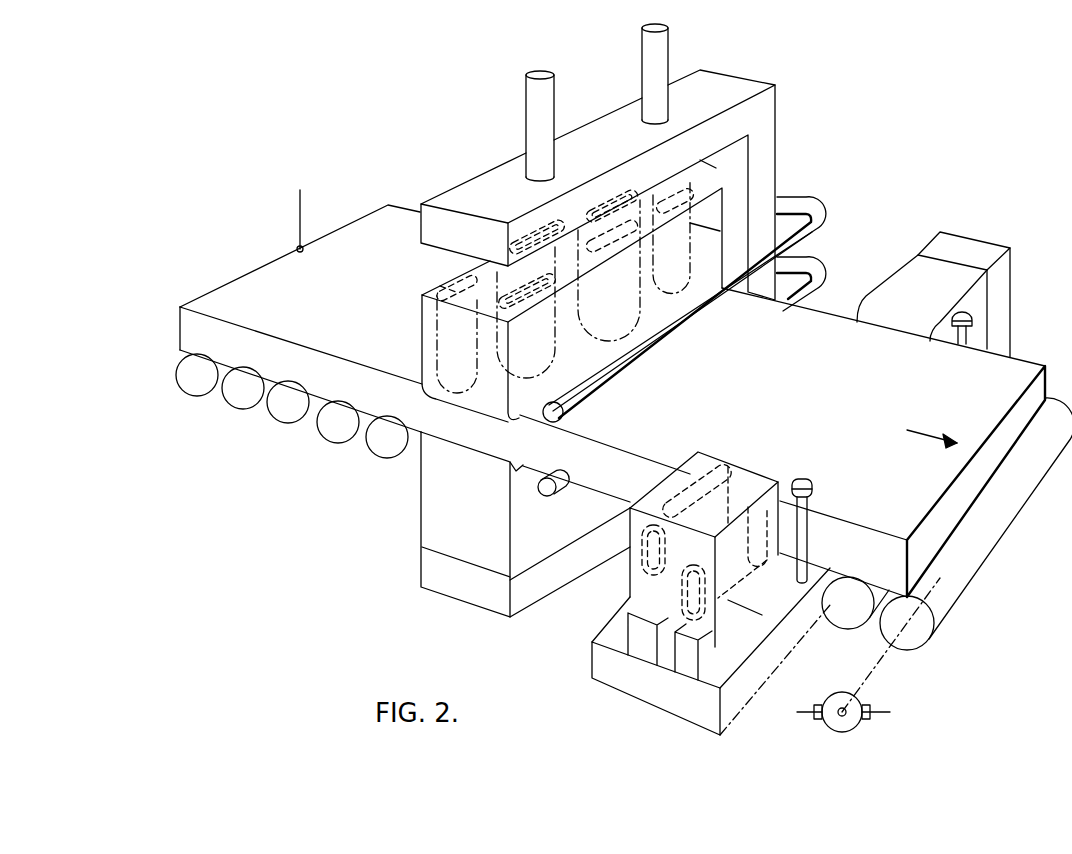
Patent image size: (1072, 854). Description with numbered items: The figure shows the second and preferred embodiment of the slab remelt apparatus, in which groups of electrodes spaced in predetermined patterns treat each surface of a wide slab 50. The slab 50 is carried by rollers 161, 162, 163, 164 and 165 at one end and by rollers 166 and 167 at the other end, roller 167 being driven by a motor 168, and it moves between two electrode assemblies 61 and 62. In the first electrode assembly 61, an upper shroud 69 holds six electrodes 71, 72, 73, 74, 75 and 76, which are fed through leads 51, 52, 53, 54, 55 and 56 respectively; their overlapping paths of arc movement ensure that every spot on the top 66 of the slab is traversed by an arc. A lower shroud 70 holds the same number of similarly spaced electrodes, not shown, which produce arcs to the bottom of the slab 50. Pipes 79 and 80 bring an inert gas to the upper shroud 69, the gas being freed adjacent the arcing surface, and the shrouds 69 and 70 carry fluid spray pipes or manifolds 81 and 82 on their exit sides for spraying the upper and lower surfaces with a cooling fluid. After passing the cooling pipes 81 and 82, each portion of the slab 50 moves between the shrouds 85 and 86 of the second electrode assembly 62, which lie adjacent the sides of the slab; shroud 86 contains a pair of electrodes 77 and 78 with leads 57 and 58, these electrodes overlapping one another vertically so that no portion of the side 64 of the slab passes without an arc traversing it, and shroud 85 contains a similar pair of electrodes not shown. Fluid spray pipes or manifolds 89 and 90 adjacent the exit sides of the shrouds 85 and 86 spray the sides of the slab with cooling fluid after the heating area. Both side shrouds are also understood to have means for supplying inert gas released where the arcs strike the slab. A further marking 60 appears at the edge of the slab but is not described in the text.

The slab 50 is at (236, 288).
The reference marker 60 is at (300, 211).
The electrode assembly 61 is at (494, 172).
The second electrode assembly 62 is at (997, 240).
The side of the slab 64 is at (882, 545).
The top of the slab 66 is at (1027, 372).
The upper shroud 69 is at (421, 352).
The lower shroud 70 is at (421, 533).
The electrode 71 is at (474, 282).
The electrode 72 is at (590, 399).
The electrode 73 is at (537, 235).
The electrode 74 is at (672, 332).
The electrode 75 is at (612, 196).
The electrode 76 is at (703, 310).
The electrode 77 is at (682, 503).
The electrode 78 is at (684, 597).
The pipe 79 is at (530, 98).
The pipe 80 is at (645, 50).
The fluid spray pipe or manifold 81 is at (636, 356).
The fluid spray pipe or manifold 82 is at (568, 492).
The shroud 85 is at (888, 281).
The shroud 86 is at (689, 459).
The fluid spray pipe or manifold 89 is at (960, 345).
The fluid spray pipe or manifold 90 is at (800, 540).
The lead 51 is at (450, 265).
The lead 52 is at (570, 300).
The lead 53 is at (640, 267).
The lead 54 is at (690, 263).
The lead 55 is at (706, 228).
The lead 56 is at (716, 168).
The lead 57 is at (646, 555).
The lead 58 is at (745, 620).
The roller 161 is at (185, 382).
The roller 162 is at (242, 403).
The roller 163 is at (290, 418).
The roller 164 is at (334, 434).
The roller 165 is at (383, 448).
The roller 166 is at (842, 618).
The roller 167 is at (917, 640).
The motor 168 is at (852, 732).